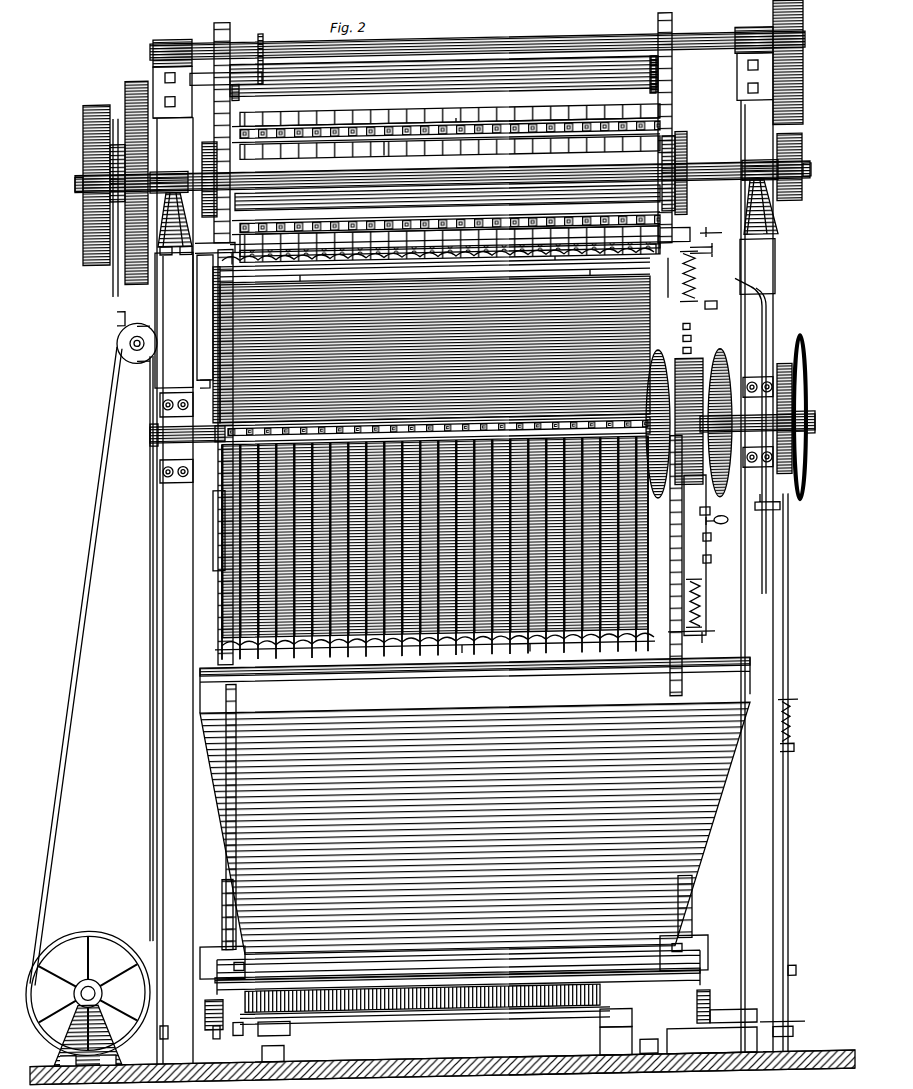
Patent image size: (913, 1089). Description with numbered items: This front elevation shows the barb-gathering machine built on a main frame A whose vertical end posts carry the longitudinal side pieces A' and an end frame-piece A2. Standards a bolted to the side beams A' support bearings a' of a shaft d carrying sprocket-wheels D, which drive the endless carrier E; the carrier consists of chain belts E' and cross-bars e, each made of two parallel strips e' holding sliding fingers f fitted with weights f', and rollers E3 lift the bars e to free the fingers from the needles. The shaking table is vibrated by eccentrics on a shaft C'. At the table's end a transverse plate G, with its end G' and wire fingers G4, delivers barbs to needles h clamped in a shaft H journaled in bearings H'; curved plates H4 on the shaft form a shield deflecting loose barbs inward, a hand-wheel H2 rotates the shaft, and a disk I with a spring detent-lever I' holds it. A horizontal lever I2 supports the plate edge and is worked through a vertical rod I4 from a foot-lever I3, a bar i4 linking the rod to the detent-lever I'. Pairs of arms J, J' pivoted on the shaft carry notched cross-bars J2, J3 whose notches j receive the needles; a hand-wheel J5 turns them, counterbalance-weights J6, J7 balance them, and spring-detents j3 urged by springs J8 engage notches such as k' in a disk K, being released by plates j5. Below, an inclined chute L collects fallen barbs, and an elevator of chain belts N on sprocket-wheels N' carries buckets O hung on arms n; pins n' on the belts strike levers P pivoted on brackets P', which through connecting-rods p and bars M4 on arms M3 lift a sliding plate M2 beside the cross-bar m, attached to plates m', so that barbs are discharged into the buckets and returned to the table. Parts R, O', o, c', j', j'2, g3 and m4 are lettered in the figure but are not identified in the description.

The main frame A is at (482, 581).
The longitudinal side pieces A' is at (465, 361).
The end frame-piece A2 is at (475, 685).
The pins n' is at (463, 63).
The lugs or arms n is at (477, 34).
The sprocket-wheels N' is at (513, 497).
The chain belts N is at (441, 610).
The upright rod R is at (262, 36).
The roller bracket O' is at (423, 56).
The elevator-buckets O is at (443, 76).
The small pinion o is at (238, 90).
The cross-bars or travelers e is at (446, 161).
The parallel strips e' is at (377, 150).
The comb pin c' is at (450, 111).
The fingers f is at (450, 173).
The weights f' is at (462, 107).
The sprocket-wheels D is at (236, 161).
The shaft d is at (447, 180).
The bearings a' is at (464, 166).
The standards a is at (476, 217).
The shaft C' is at (443, 182).
The brackets P' is at (391, 992).
The chain belts E' is at (449, 162).
The endless carrier E is at (680, 165).
The rollers E3 is at (690, 223).
The end of plate G G' is at (713, 220).
The lower comb bar j' is at (445, 429).
The forwardly-projecting fingers G4 is at (396, 266).
The cross-bar J2 is at (474, 260).
The transverse plate G is at (561, 267).
The needles h is at (320, 272).
The shield plates H4 is at (431, 340).
The bearing-boxes H' is at (482, 428).
The shaft H is at (482, 424).
The triangular notches j is at (435, 549).
The notch k' is at (429, 655).
The cross-bar J3 is at (465, 642).
The inclined chute L is at (475, 828).
The counterbalance-weight J7 is at (197, 347).
The counterbalance-weight J6 is at (212, 537).
The arms J' is at (455, 501).
The disk K is at (689, 421).
The hand-wheel J5 is at (712, 365).
The spring-detents j3 is at (682, 358).
The pawl pin j'2 is at (688, 327).
The plate j5 is at (719, 532).
The vertical rod I4 is at (704, 312).
The horizontal lever I2 is at (704, 254).
The link g3 is at (658, 252).
The coiled spring J8 is at (696, 278).
The arms J is at (658, 278).
The disk I is at (807, 417).
The hand-wheel H2 is at (804, 470).
The spring detent-lever I' is at (787, 768).
The vertical bar i4 is at (786, 516).
The cross-bar m is at (457, 970).
The plates m' is at (467, 925).
The sliding plate M2 is at (425, 1004).
The arms M3 is at (293, 1024).
The bars M4 is at (294, 1048).
The levers P is at (466, 1024).
The connecting-rods p is at (214, 1043).
The block m4 is at (467, 1037).
The foot-lever I3 is at (774, 1044).